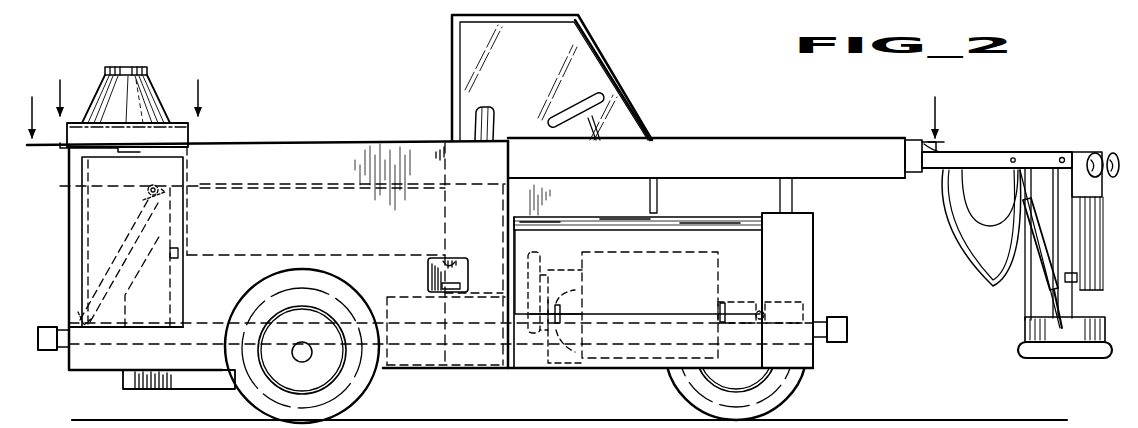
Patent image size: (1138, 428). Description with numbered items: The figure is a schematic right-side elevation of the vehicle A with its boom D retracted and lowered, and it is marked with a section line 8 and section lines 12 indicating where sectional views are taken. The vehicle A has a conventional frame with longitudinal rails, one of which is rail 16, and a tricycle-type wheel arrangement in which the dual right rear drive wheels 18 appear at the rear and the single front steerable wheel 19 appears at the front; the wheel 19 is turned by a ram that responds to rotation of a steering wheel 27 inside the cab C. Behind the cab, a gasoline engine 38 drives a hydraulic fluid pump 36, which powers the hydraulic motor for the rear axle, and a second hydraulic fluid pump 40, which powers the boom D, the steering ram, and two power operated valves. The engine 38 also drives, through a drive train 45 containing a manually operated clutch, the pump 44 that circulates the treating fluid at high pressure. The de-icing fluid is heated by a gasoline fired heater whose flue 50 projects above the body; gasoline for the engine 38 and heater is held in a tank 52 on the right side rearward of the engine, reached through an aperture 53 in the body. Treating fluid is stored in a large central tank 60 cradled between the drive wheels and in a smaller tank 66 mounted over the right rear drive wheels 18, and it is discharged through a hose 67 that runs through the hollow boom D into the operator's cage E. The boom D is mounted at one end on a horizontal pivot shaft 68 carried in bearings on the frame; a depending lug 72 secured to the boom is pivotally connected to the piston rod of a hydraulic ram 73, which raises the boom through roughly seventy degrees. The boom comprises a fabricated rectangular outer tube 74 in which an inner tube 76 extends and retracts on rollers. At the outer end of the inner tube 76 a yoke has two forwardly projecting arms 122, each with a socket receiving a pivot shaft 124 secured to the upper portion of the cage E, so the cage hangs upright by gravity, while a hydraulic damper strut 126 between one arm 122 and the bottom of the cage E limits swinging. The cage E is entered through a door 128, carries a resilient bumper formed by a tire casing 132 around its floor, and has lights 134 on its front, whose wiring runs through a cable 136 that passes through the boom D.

The section line 8- 8 is at (482, 118).
The section line 12- 12 is at (130, 93).
The longitudinal rail 16 is at (458, 344).
The dual right rear drive wheels 18 is at (265, 388).
The single front steerable wheel 19 is at (778, 374).
The steering wheel 27 is at (588, 112).
The hydraulic fluid pump 36 is at (738, 300).
The gasoline engine 38 is at (605, 252).
The hydraulic fluid pump 40 is at (783, 300).
The pump 44 is at (565, 272).
The drive train 45 is at (535, 252).
The flue 50 is at (115, 100).
The tank 52 is at (410, 295).
The aperture 53 is at (452, 262).
The large central tank 60 is at (197, 196).
The tank 66 is at (445, 160).
The hose 67 is at (965, 235).
The horizontal pivot shaft 68 is at (80, 186).
The depending lugs 72 is at (146, 190).
The hydraulic ram 73 is at (115, 243).
The outer tube 74 is at (730, 168).
The inner tube 76 is at (912, 165).
The arms 122 is at (975, 160).
The pivot shaft 124 is at (1063, 157).
The hydraulic damper strut 126 is at (1038, 242).
The door 128 is at (1093, 250).
The tire casing 132 is at (1043, 348).
The lights 134 is at (1118, 153).
The cable 136 is at (990, 222).
The vehicle A is at (376, 112).
The cab C is at (604, 42).
The boom D is at (843, 135).
The operators cage E is at (1024, 290).